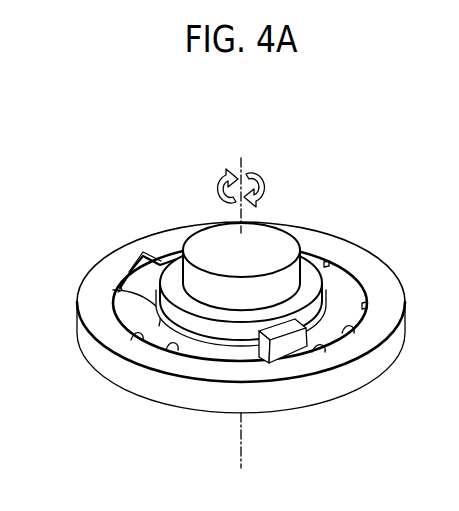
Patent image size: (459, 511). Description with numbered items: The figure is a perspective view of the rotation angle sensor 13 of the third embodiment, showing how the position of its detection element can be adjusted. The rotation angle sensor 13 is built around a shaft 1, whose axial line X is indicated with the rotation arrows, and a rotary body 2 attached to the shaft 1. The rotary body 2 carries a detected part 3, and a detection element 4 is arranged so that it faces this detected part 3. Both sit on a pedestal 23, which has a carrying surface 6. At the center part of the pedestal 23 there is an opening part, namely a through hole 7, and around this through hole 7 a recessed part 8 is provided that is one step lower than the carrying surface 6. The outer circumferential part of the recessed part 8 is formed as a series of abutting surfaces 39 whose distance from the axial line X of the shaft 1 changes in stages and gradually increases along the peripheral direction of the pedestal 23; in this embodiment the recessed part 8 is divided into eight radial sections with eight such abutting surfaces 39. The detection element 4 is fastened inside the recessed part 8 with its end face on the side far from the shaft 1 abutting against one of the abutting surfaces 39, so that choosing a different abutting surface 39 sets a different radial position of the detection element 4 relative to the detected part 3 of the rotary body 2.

The shaft 1 is at (275, 250).
The rotary body 2 is at (128, 275).
The detected part 3 is at (200, 322).
The detection element 4 is at (288, 352).
The carrying surface 6 is at (356, 262).
The through hole 7 is at (110, 291).
The recessed part 8 is at (150, 322).
The rotation angle sensor 13 is at (226, 287).
The pedestal 23 is at (104, 356).
The abutting surfaces 39 is at (165, 346).